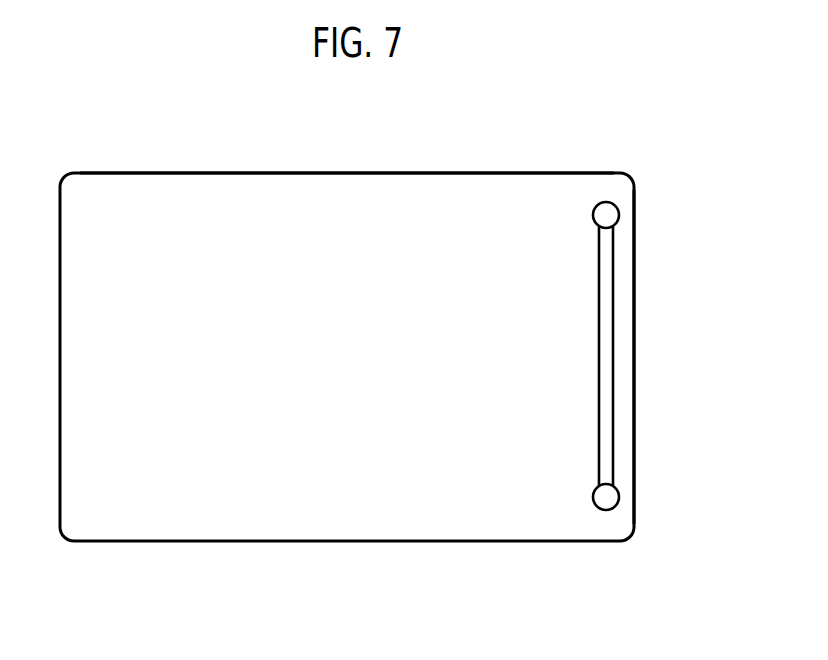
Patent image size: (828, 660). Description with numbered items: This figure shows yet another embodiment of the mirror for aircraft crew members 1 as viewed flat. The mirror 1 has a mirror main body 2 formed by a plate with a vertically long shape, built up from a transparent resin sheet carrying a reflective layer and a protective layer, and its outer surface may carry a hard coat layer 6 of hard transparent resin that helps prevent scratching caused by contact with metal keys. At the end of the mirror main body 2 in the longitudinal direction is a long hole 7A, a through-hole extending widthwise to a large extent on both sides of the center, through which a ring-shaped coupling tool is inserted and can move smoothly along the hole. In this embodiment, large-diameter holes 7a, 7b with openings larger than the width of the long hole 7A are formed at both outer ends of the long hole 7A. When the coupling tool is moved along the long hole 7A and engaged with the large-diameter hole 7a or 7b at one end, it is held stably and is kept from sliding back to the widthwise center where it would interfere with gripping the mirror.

The mirror for aircraft crew members 1 is at (558, 163).
The mirror main body 2 is at (630, 293).
The hard coat layer 6 is at (343, 188).
The long hole 7A is at (603, 423).
The large-diameter hole 7a is at (595, 207).
The large-diameter hole 7b is at (600, 504).